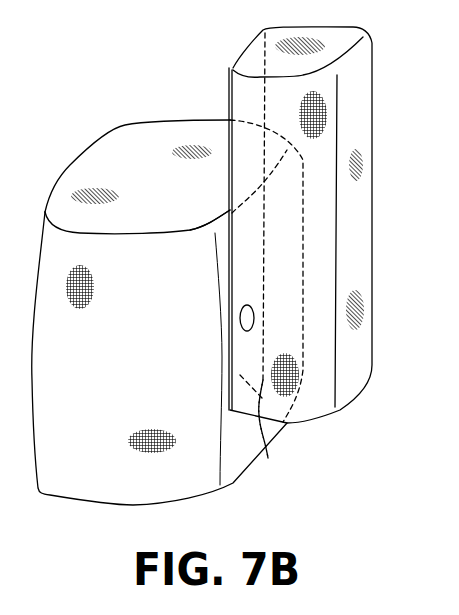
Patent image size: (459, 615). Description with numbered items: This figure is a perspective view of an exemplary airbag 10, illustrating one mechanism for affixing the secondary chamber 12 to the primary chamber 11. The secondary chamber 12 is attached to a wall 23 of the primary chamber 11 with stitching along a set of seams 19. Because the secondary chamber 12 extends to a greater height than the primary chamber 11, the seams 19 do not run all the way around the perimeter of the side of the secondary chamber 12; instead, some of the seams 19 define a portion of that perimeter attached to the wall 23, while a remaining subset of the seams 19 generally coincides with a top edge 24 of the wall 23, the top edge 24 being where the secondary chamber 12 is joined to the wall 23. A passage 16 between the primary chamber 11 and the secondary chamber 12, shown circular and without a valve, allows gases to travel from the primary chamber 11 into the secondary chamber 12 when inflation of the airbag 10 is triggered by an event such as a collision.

The airbag 10 is at (162, 101).
The primary chamber 11 is at (157, 313).
The secondary chamber 12 is at (333, 234).
The passage 16 is at (256, 320).
The seams 19 is at (228, 355).
The wall 23 is at (268, 458).
The top edge 24 is at (220, 205).